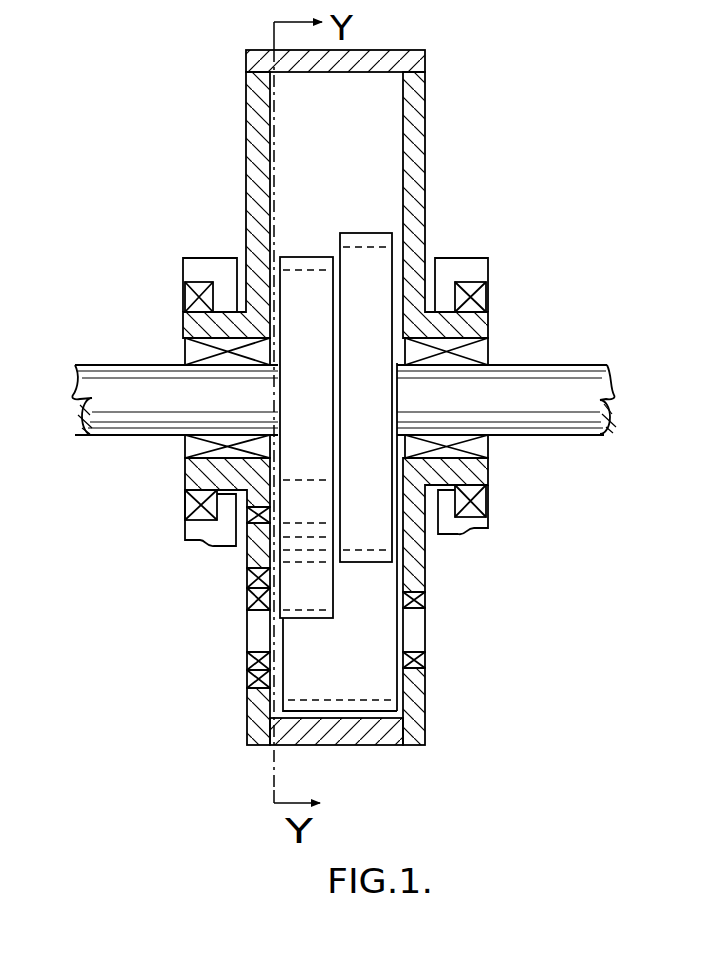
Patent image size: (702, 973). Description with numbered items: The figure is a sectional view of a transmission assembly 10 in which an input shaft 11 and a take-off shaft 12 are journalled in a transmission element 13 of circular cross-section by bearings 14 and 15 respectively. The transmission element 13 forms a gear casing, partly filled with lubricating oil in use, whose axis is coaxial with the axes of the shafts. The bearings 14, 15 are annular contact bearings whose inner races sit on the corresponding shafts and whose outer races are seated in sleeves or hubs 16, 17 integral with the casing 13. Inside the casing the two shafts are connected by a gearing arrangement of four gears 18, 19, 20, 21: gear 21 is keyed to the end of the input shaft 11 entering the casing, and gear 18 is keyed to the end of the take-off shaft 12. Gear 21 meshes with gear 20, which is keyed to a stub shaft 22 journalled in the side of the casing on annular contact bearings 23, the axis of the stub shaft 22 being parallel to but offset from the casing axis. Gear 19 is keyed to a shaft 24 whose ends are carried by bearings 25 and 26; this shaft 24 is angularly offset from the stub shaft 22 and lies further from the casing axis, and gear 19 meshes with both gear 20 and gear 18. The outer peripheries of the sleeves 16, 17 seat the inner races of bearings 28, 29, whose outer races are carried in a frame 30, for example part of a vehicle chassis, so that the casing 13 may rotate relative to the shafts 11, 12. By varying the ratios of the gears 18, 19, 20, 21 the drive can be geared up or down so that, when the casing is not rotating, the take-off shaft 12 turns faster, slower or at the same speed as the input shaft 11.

The transmission assembly 10 is at (195, 140).
The input shaft 11 is at (180, 393).
The take-off shaft 12 is at (495, 395).
The transmission element 13 is at (412, 80).
The bearing 14 is at (197, 448).
The bearing 15 is at (478, 448).
The sleeve 16 is at (187, 490).
The sleeve 17 is at (477, 472).
The gear 18 is at (368, 520).
The gear 19 is at (368, 682).
The gear 20 is at (308, 587).
The gear 21 is at (303, 285).
The stub shaft 22 is at (263, 548).
The annular contact bearings 23 is at (265, 572).
The shaft 24 is at (267, 643).
The bearing 25 is at (258, 672).
The bearing 26 is at (423, 663).
The bearing 28 is at (197, 298).
The bearing 29 is at (480, 293).
The frame 30 is at (207, 527).